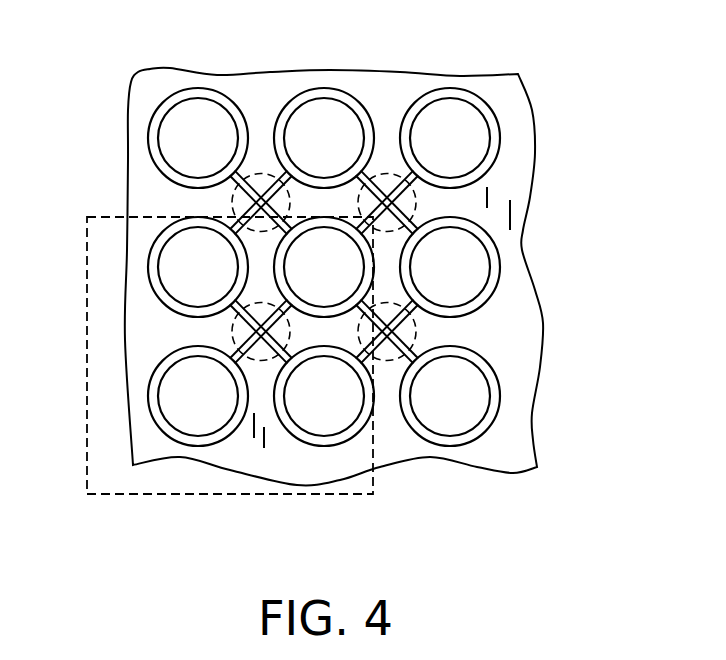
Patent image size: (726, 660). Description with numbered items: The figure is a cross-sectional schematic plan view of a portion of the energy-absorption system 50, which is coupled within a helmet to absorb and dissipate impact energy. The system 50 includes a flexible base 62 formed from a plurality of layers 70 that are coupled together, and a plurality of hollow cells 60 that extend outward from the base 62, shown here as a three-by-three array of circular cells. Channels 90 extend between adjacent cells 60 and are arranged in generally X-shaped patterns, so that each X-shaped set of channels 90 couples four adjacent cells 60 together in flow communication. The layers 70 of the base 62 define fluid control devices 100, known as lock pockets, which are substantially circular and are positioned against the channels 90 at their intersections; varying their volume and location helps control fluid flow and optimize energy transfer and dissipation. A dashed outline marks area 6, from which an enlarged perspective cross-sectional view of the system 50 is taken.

The area 6- 6 is at (329, 494).
The energy-absorption system 50 is at (386, 223).
The hollow cells 60 is at (456, 263).
The base 62 is at (510, 330).
The layers 70 is at (120, 57).
The channels 90 is at (403, 186).
The fluid control devices 100 is at (256, 172).